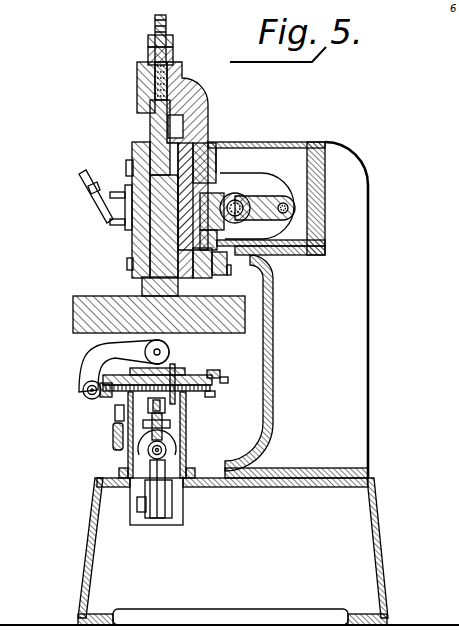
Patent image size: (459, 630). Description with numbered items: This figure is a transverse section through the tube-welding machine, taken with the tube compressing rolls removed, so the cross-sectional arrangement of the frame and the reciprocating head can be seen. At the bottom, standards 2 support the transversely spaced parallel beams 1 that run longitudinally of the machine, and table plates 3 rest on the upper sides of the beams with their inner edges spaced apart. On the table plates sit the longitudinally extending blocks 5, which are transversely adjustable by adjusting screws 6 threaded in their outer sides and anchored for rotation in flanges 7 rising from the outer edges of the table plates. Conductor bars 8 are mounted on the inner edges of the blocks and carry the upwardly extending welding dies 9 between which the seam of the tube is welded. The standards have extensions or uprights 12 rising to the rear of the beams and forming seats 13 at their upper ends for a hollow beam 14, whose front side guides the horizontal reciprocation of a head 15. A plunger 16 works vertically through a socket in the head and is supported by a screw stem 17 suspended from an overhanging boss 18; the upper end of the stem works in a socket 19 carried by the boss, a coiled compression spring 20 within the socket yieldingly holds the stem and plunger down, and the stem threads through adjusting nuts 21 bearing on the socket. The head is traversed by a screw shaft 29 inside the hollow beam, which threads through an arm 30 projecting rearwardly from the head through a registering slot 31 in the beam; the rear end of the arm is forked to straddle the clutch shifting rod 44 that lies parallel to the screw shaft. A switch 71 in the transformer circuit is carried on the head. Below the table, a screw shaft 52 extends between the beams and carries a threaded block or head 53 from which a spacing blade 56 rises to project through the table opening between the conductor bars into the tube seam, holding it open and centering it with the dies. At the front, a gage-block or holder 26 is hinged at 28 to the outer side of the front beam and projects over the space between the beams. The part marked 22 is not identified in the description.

The beams 1 is at (186, 432).
The standards 2 is at (87, 543).
The table plates 3 is at (210, 394).
The blocks 5 is at (190, 378).
The adjusting screws 6 is at (226, 383).
The flanges 7 is at (214, 377).
The conductor bars 8 is at (182, 376).
The welding dies 9 is at (173, 378).
The uprights 12 is at (296, 310).
The seats 13 is at (293, 256).
The hollow beam 14 is at (264, 155).
The head 15 is at (132, 171).
The plunger 16 is at (148, 243).
The screw stem 17 is at (150, 125).
The overhanging boss 18 is at (183, 82).
The socket 19 is at (174, 57).
The coiled compression spring 20 is at (152, 63).
The adjusting nuts 21 is at (170, 37).
The platen 22 is at (80, 312).
The gage-blocks 26 is at (100, 349).
The hinge 28 is at (90, 400).
The screw shaft 29 is at (235, 206).
The arm 30 is at (252, 190).
The slot 31 is at (214, 152).
The clutch shifting rod 44 is at (287, 207).
The screw shaft 52 is at (167, 450).
The blocks 53 is at (165, 495).
The spacing blade 56 is at (162, 398).
The switch 71 is at (100, 207).